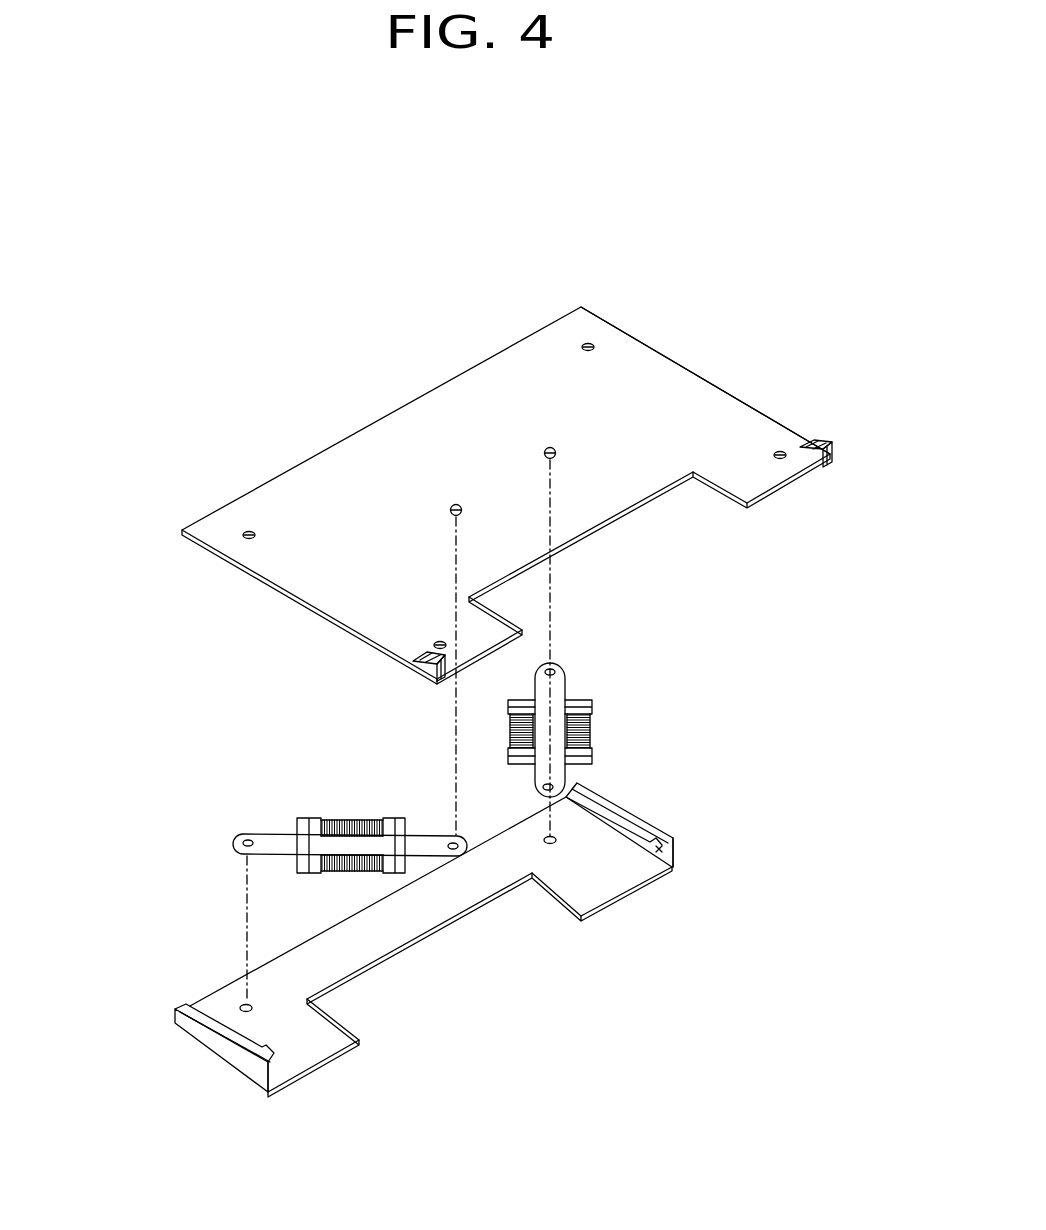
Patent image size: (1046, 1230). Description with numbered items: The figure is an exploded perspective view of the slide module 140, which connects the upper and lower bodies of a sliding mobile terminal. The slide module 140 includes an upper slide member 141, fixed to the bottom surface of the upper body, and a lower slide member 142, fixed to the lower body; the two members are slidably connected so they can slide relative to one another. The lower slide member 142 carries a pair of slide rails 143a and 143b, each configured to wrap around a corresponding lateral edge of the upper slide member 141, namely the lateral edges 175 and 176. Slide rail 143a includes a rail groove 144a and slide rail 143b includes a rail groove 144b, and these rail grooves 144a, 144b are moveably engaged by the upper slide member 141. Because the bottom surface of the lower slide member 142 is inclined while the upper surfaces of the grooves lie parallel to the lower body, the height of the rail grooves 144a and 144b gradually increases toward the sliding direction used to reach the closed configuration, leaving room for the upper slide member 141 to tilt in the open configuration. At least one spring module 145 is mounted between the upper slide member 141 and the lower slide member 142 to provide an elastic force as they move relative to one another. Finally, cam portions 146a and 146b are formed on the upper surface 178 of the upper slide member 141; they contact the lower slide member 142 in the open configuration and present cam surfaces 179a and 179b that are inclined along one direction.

The slide module 140 is at (133, 416).
The upper slide member 141 is at (452, 381).
The lower slide member 142 is at (598, 888).
The slide rail 143a is at (205, 1018).
The slide rail 143b is at (618, 820).
The rail groove 144a is at (273, 1070).
The rail groove 144b is at (662, 862).
The spring module 145 is at (280, 840).
The cam portion 146a is at (440, 682).
The cam portion 146b is at (833, 448).
The lateral edge 175 is at (250, 572).
The lateral edge 176 is at (662, 352).
The upper surface 178 is at (352, 462).
The cam surface 179a is at (410, 655).
The cam surface 179b is at (813, 440).